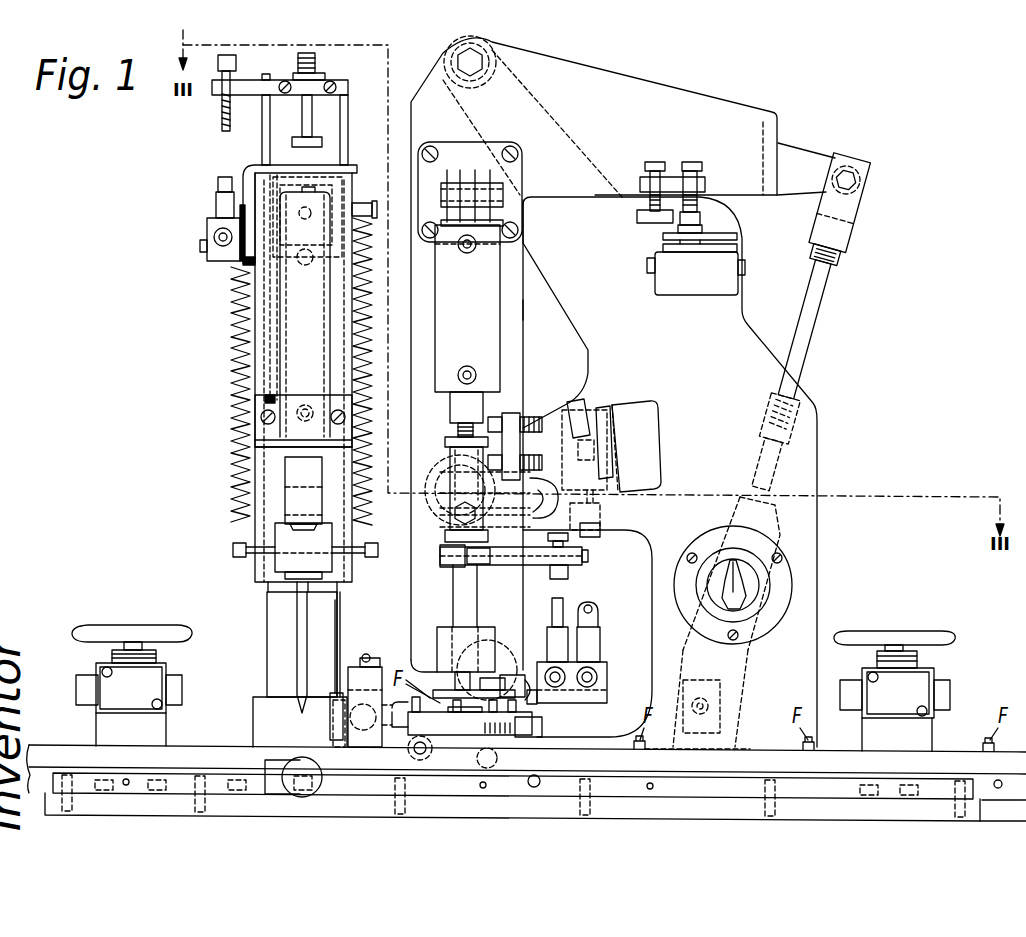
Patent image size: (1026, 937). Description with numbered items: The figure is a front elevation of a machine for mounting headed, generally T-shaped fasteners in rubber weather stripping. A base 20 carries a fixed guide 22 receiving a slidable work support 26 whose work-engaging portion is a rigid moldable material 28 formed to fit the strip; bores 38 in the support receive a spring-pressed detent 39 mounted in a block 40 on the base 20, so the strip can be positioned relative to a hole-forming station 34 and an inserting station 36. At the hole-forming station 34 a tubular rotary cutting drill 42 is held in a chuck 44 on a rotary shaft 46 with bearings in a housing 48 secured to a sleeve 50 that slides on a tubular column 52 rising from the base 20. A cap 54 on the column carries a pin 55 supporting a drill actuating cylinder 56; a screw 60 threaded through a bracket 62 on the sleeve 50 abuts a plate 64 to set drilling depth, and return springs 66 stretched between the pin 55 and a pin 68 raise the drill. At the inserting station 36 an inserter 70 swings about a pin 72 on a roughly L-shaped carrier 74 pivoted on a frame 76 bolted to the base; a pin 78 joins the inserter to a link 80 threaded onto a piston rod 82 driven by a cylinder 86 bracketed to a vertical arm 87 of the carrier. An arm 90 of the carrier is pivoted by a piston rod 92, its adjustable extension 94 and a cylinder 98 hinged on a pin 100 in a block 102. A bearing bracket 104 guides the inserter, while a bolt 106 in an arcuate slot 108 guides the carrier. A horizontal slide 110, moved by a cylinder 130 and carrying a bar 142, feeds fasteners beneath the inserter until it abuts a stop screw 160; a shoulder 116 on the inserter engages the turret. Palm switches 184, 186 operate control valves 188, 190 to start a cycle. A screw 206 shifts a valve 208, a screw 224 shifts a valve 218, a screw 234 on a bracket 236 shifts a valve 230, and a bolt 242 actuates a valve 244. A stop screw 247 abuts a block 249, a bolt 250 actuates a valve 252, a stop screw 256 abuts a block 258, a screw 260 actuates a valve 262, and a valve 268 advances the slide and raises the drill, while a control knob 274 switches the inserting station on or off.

The base 20 is at (52, 810).
The fixed parallel guide 22 is at (48, 760).
The work support 26 is at (1010, 797).
The moldable material 28 is at (950, 750).
The hole-forming station 34 is at (198, 540).
The inserting station 36 is at (387, 578).
The bores 38 is at (128, 780).
The spring-pressed detent 39 is at (306, 797).
The block 40 is at (268, 792).
The rotary cutting drill 42 is at (298, 624).
The chuck 44 is at (292, 585).
The rotary shaft 46 is at (305, 456).
The housing 48 is at (291, 345).
The sleeve 50 is at (262, 582).
The tubular column 52 is at (266, 678).
The cap 54 is at (258, 180).
The pin 55 is at (362, 203).
The drill actuating cylinder 56 is at (272, 318).
The screw 60 is at (310, 135).
The bracket 62 is at (347, 128).
The plate 64 is at (320, 180).
The return springs 66 is at (238, 340).
The pin 68 is at (244, 550).
The inserter 70 is at (455, 591).
The pin 72 is at (482, 86).
The carrier 74 is at (532, 200).
The frame 76 is at (649, 352).
The pin 78 is at (484, 532).
The link 80 is at (450, 452).
The piston rod 82 is at (455, 428).
The cylinder 86 is at (457, 324).
The vertical arm 87 is at (523, 300).
The arm 90 is at (780, 134).
The piston rod 92 is at (770, 490).
The adjustable extension 94 is at (814, 332).
The cylinder 98 is at (752, 660).
The pin 100 is at (722, 703).
The block 102 is at (722, 748).
The bearing bracket 104 is at (480, 632).
The bolt 106 is at (455, 508).
The arcuate slot 108 is at (540, 510).
The slide 110 is at (530, 724).
The shoulder 116 is at (446, 672).
The cylinder 130 is at (516, 680).
The bar 142 is at (386, 704).
The stop screw 160 is at (494, 764).
The palm switch 184 is at (120, 627).
The palm switch 186 is at (912, 633).
The control valve 188 is at (157, 673).
The control valve 190 is at (920, 690).
The screw 206 is at (222, 113).
The valve 208 is at (210, 228).
The valve 218 is at (355, 668).
The screw 224 is at (332, 724).
The spring-return valve 230 is at (552, 612).
The screw 234 is at (568, 582).
The bracket 236 is at (582, 565).
The bolt 242 is at (598, 538).
The valve 244 is at (600, 671).
The stop screw 247 is at (472, 430).
The block 249 is at (588, 408).
The bolt 250 is at (532, 466).
The valve 252 is at (652, 413).
The stop screw 256 is at (658, 162).
The block 258 is at (638, 218).
The screw 260 is at (698, 160).
The valve 262 is at (664, 288).
The valve 268 is at (638, 475).
The control knob 274 is at (755, 586).